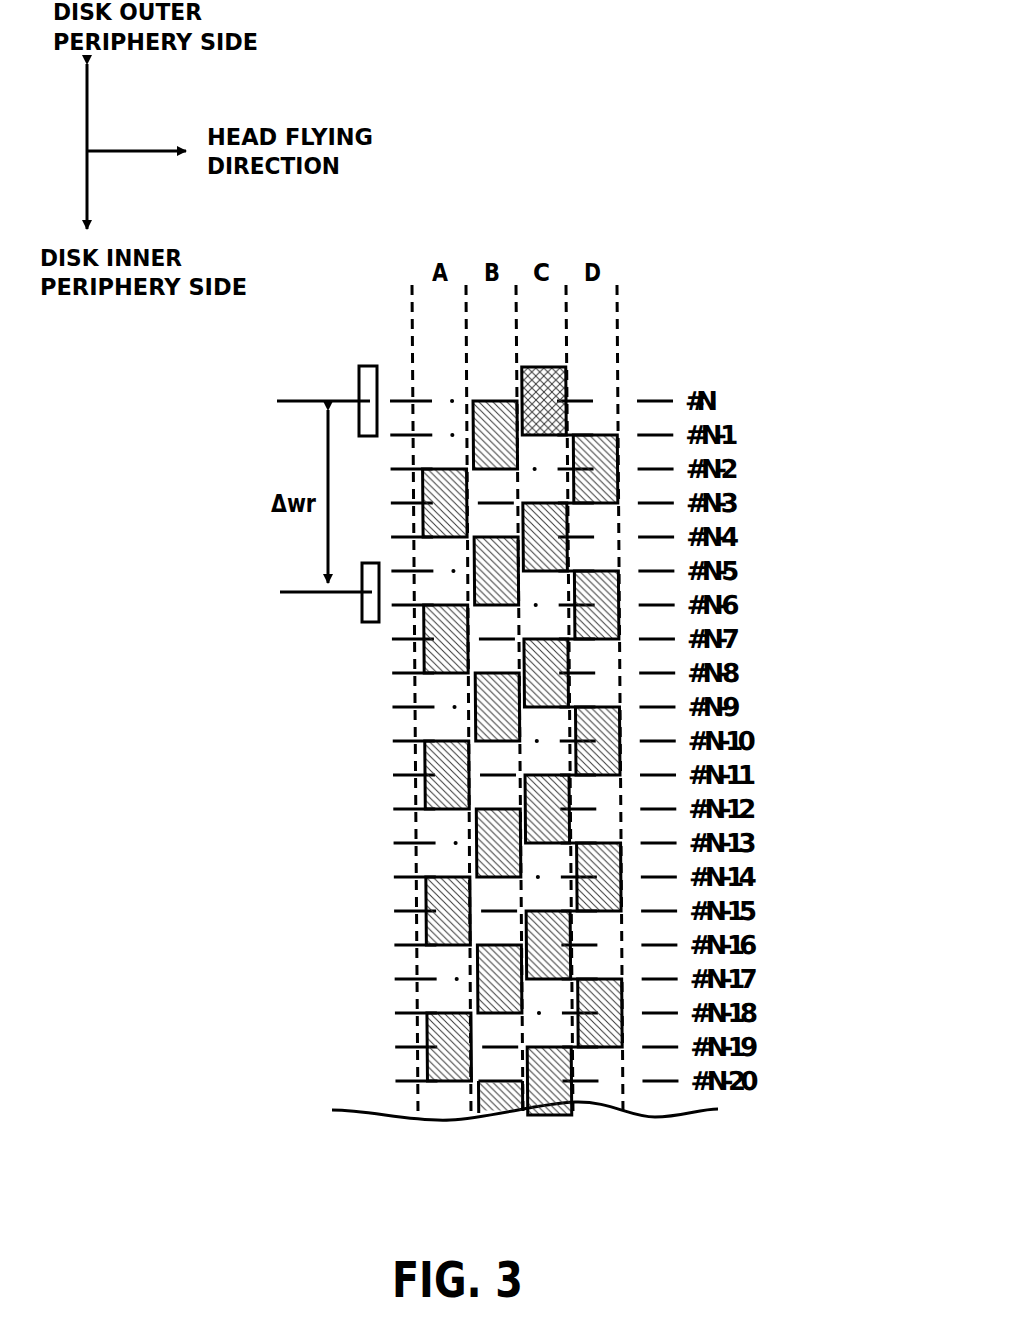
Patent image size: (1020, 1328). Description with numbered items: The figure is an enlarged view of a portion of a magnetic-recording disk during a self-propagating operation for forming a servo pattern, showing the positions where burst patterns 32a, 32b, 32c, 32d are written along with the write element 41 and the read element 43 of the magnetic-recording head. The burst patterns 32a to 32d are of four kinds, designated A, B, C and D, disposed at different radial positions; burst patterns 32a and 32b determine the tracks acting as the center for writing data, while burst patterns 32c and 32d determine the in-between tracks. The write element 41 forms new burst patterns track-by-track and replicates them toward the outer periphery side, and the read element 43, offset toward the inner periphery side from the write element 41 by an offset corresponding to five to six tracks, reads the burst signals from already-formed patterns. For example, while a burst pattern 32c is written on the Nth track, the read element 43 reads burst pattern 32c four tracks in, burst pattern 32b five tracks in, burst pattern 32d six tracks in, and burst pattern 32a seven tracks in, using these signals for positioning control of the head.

The write element 41 is at (370, 366).
The read element 43 is at (360, 612).
The burst pattern 32a is at (422, 651).
The burst pattern 32b is at (501, 605).
The burst pattern 32c is at (568, 530).
The burst pattern 32d is at (618, 592).